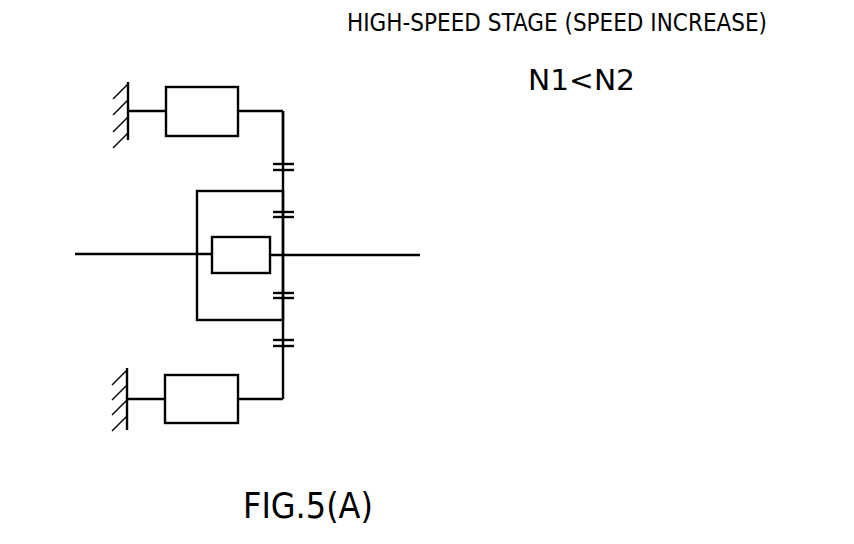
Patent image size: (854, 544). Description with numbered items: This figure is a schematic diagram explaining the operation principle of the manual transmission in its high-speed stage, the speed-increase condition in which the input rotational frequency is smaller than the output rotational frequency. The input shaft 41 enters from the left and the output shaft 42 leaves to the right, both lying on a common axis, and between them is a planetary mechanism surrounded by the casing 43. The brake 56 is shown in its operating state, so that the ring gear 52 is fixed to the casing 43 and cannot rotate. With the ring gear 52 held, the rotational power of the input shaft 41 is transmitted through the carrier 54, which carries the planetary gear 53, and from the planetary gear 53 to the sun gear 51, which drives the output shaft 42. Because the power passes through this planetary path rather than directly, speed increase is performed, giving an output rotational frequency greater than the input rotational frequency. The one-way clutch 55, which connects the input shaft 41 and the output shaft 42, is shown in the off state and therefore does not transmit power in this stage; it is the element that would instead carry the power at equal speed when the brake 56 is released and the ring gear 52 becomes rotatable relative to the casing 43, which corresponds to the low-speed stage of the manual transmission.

The input shaft 41 is at (107, 253).
The output shaft 42 is at (390, 253).
The casing 43 is at (130, 93).
The sun gear 51 is at (283, 231).
The ring gear 52 is at (283, 130).
The planetary gear 53 is at (283, 182).
The carrier 54 is at (197, 197).
The one-way clutch 55 is at (212, 242).
The brake 56 is at (198, 87).